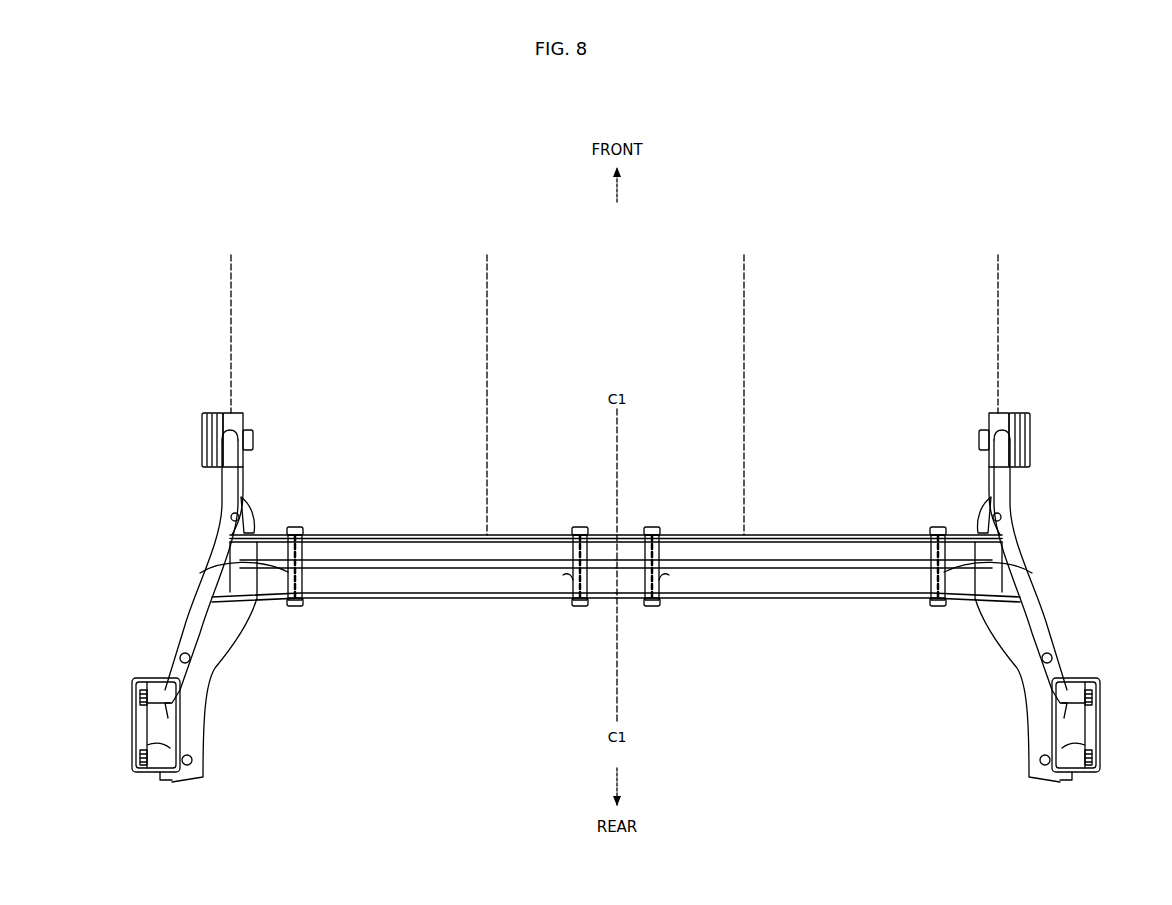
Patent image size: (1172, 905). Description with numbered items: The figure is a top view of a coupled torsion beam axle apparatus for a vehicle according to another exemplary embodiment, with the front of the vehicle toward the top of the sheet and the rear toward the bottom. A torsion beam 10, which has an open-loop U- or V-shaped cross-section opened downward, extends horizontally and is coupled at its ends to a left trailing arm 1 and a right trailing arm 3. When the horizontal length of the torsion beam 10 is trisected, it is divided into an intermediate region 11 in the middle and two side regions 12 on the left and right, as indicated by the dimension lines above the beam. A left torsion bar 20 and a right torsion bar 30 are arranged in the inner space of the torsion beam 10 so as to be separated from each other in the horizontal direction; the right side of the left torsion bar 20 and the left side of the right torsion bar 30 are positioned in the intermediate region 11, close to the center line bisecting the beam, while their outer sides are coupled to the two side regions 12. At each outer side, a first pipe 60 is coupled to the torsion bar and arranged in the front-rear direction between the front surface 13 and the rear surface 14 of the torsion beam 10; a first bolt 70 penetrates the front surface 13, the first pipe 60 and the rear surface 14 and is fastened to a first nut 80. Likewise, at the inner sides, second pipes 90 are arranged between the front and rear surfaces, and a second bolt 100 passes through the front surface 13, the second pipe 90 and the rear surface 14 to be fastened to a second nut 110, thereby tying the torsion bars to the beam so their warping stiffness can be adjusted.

The left trailing arm 1 is at (172, 660).
The right trailing arm 3 is at (1060, 665).
The torsion beam 10 is at (738, 603).
The intermediate region 11 is at (487, 267).
The side regions 12 is at (231, 267).
The front surface 13 is at (388, 535).
The rear surface 14 is at (375, 600).
The left torsion bar 20 is at (440, 568).
The right torsion bar 30 is at (828, 568).
The first pipe 60 is at (290, 576).
The first bolt 70 is at (295, 527).
The first nut 80 is at (295, 606).
The second pipe 90 is at (565, 575).
The second bolt 100 is at (580, 527).
The second nut 110 is at (580, 606).